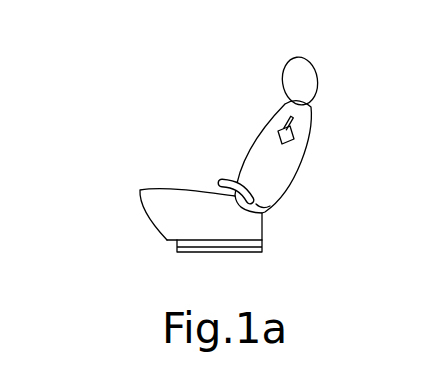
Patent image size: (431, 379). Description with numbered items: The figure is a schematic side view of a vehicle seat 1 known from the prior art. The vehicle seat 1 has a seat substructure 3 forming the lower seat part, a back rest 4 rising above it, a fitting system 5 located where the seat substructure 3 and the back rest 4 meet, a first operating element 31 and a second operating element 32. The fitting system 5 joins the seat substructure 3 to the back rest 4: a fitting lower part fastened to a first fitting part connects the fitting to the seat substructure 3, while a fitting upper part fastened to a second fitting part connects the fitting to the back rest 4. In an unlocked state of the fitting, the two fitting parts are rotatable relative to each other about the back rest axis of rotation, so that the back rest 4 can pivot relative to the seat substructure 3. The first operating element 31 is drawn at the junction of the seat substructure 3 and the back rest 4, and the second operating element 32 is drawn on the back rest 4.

The vehicle seat 1 is at (238, 148).
The seat substructure 3 is at (175, 213).
The back rest 4 is at (268, 160).
The fitting system 5 is at (277, 200).
The first operating element 31 is at (222, 182).
The second operating element 32 is at (308, 125).